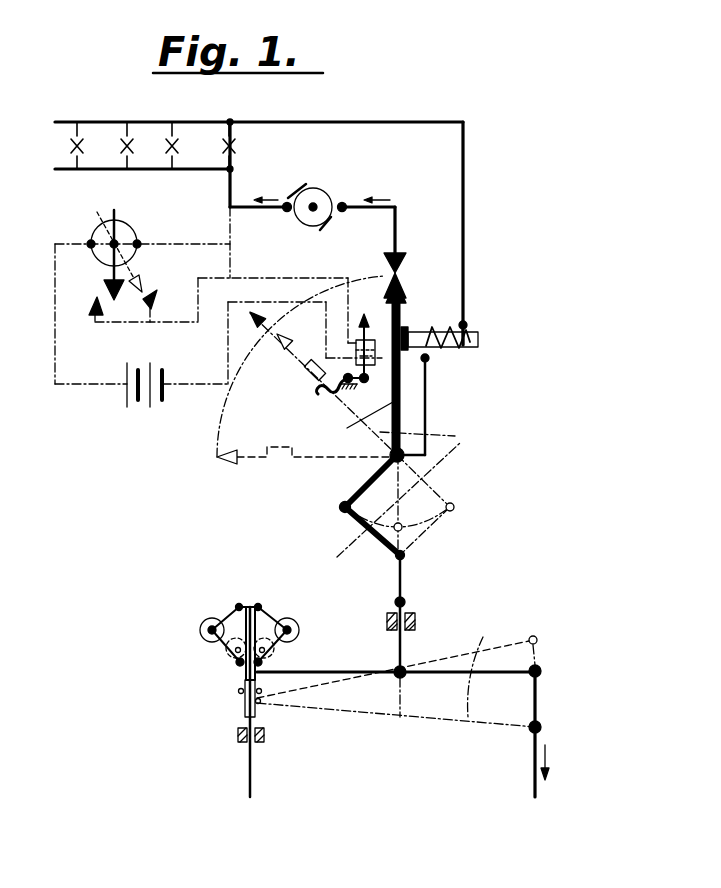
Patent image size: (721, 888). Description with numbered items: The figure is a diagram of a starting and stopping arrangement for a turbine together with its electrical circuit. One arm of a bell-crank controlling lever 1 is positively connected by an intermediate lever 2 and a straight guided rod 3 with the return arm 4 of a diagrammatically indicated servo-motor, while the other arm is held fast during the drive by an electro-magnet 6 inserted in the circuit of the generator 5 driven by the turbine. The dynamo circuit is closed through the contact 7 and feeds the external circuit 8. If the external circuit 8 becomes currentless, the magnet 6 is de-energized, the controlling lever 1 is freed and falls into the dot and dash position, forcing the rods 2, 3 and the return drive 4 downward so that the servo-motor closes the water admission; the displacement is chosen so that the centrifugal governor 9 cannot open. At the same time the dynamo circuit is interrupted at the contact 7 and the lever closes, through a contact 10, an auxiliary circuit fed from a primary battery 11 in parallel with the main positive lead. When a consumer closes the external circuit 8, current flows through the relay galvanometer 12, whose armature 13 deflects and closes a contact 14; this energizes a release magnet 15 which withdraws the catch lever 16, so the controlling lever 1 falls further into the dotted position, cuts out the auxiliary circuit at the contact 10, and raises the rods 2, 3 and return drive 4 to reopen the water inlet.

The bell-crank lever 1 is at (363, 483).
The intermediate lever 2 is at (372, 530).
The straight guided rod 3 is at (402, 580).
The return arm 4 is at (462, 668).
The generator 5 is at (320, 200).
The electro-magnet 6 is at (468, 342).
The contact 7 is at (404, 271).
The external circuit 8 is at (84, 164).
The centrifugal governor 9 is at (228, 646).
The contact 10 is at (256, 330).
The primary battery 11 is at (148, 395).
The galvanometer 12 is at (98, 254).
The armature 13 is at (136, 276).
The contact 14 is at (148, 303).
The release magnet 15 is at (375, 365).
The catch lever 16 is at (322, 391).